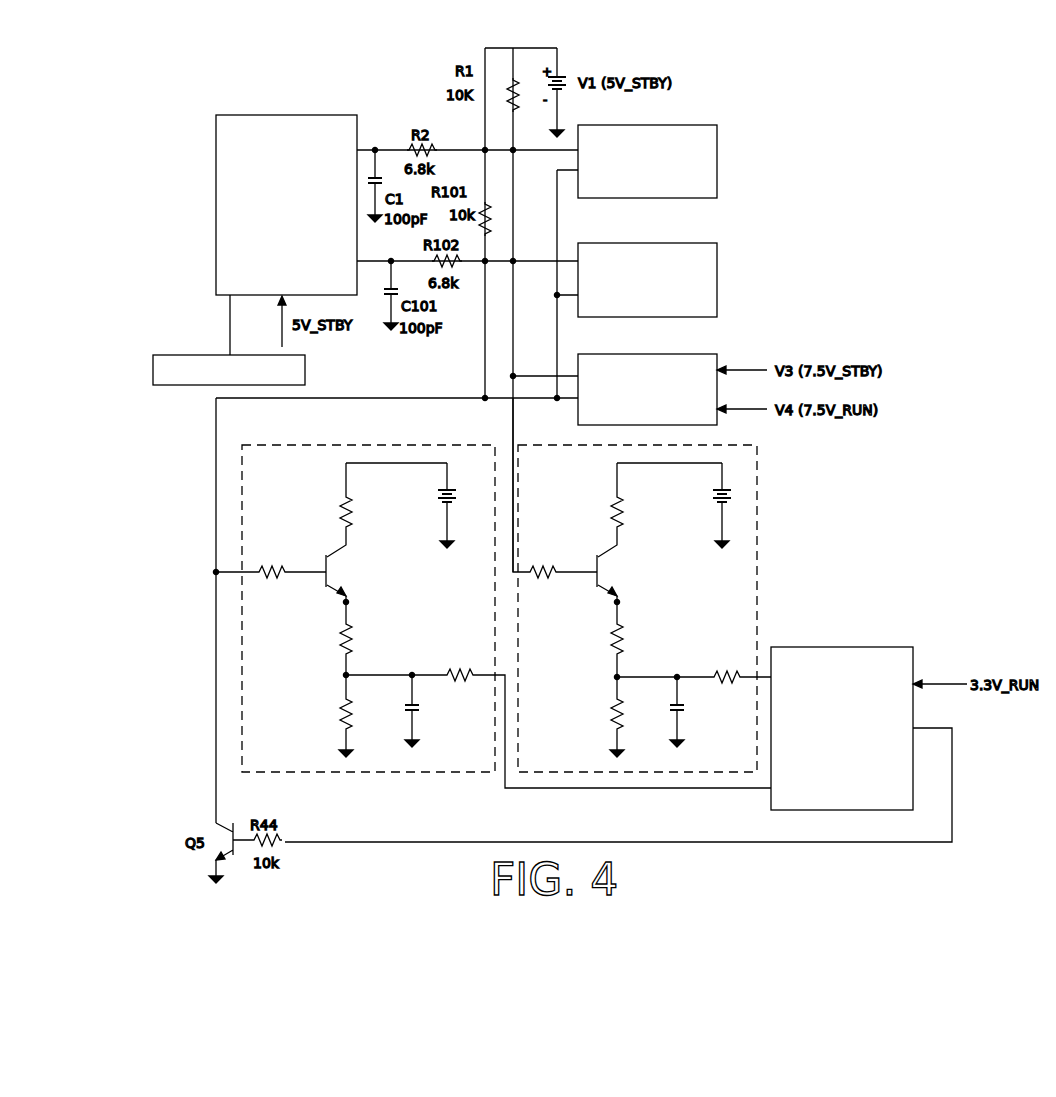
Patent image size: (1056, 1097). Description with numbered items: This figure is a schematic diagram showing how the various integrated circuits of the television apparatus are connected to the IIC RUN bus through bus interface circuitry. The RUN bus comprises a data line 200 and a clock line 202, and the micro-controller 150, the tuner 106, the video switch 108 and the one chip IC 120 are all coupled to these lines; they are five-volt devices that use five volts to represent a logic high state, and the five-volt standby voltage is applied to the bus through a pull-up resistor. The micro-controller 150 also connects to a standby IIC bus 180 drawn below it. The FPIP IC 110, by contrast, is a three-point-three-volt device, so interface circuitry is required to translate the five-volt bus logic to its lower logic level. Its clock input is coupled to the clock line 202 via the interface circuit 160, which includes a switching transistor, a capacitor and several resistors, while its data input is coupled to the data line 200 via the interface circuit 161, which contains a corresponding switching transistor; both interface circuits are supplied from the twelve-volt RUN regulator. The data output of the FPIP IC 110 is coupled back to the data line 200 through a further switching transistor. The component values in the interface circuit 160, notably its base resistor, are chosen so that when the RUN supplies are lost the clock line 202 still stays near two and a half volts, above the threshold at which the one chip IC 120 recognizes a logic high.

The micro-controller 150 is at (356, 114).
The tuner 106 is at (717, 165).
The video switch 108 is at (717, 265).
The one chip IC 120 is at (717, 354).
The standby IIC bus 180 is at (170, 355).
The data line 200 is at (383, 398).
The clock line 202 is at (512, 431).
The interface circuit 161 is at (327, 445).
The interface circuit 160 is at (757, 525).
The FPIP IC 110 is at (893, 647).